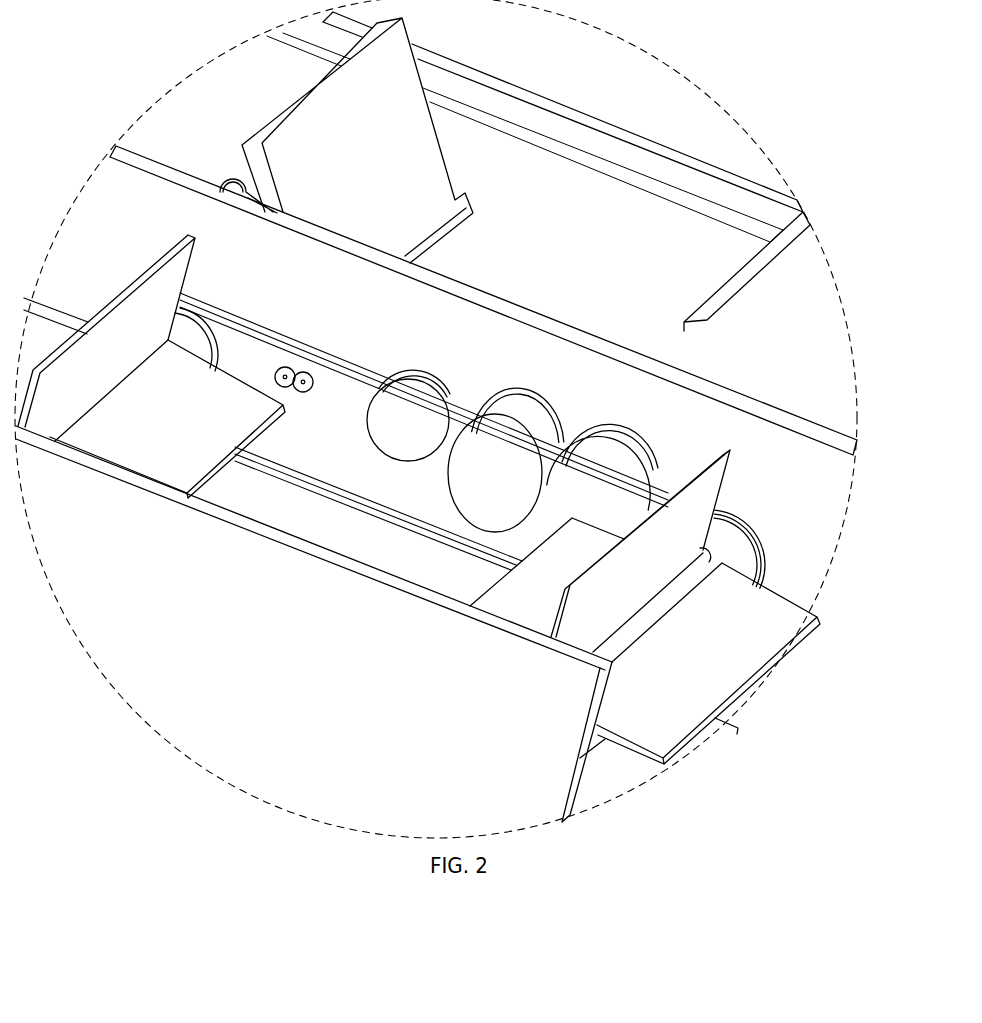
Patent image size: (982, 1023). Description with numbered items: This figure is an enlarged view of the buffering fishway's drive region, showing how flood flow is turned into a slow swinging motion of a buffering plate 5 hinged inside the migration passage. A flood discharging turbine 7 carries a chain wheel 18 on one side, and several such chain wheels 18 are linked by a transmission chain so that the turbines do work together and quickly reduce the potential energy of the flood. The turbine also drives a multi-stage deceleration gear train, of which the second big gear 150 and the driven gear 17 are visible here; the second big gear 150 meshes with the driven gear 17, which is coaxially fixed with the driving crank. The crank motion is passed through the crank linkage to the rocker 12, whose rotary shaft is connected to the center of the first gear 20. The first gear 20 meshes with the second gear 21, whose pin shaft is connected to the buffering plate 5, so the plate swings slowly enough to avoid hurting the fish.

The rocker 12 is at (230, 188).
The buffering plate 5 is at (398, 197).
The first gear 20 is at (286, 367).
The second gear 21 is at (313, 376).
The driven gear 17 is at (390, 425).
The second big gear 150 is at (487, 477).
The chain wheel 18 is at (732, 567).
The flood discharging turbine 7 is at (675, 657).